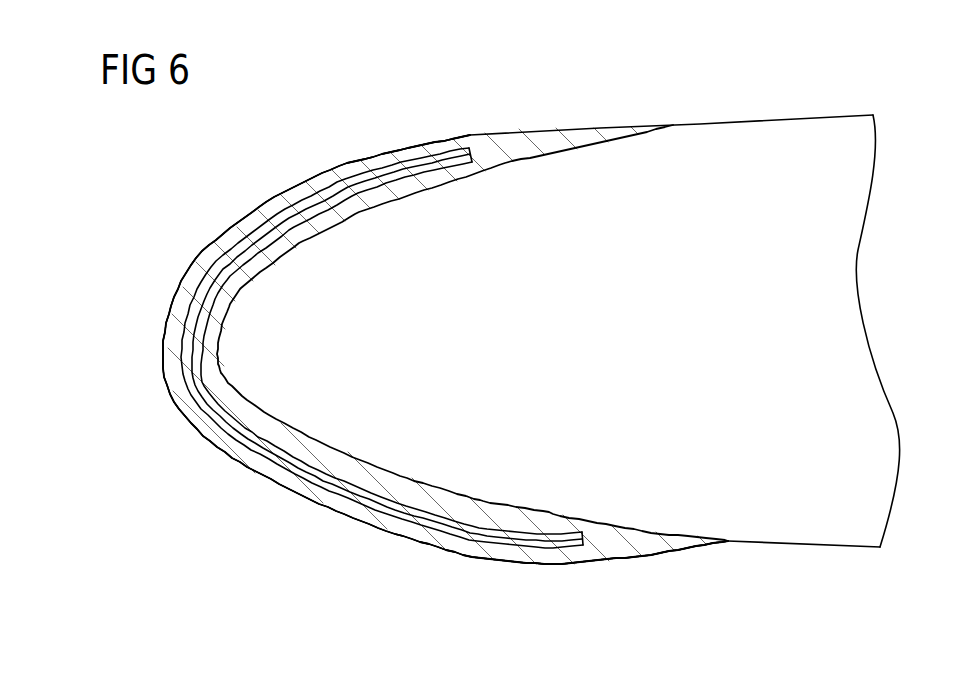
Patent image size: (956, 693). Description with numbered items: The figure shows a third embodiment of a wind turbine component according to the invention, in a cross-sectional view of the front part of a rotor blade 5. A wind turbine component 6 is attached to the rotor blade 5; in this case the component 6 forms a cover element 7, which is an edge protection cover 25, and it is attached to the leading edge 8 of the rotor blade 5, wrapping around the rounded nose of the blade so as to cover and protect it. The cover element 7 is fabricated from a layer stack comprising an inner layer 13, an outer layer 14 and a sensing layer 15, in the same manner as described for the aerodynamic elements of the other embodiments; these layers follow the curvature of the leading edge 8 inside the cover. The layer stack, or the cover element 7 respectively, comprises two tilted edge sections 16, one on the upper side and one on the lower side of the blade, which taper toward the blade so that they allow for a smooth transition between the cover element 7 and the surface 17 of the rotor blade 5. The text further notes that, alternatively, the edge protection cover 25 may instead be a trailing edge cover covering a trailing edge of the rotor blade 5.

The rotor blade 5 is at (835, 133).
The wind turbine component 6 is at (170, 302).
The cover element 7 is at (400, 349).
The edge protection cover 25 is at (414, 349).
The leading edge 8 is at (270, 262).
The inner layer 13 is at (403, 165).
The outer layer 14 is at (500, 140).
The sensing layer 15 is at (332, 187).
The tilted edge section 16 is at (588, 133).
The surface 17 is at (760, 115).